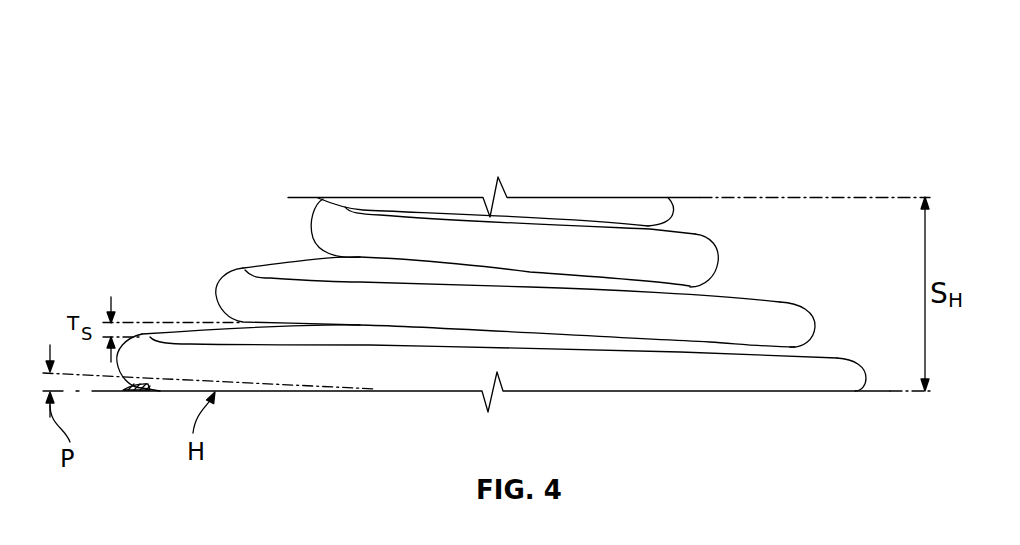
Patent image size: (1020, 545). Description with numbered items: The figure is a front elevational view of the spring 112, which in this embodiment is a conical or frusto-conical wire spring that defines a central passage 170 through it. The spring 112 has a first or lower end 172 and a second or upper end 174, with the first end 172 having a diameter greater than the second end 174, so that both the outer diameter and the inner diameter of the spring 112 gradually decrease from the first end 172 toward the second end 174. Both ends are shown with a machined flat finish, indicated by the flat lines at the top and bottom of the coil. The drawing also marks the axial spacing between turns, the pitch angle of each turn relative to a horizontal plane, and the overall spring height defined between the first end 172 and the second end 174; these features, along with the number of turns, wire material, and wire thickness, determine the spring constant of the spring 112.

The central passage 170 is at (572, 172).
The second end 174 is at (412, 195).
The spring 112 is at (758, 315).
The first end 172 is at (727, 385).